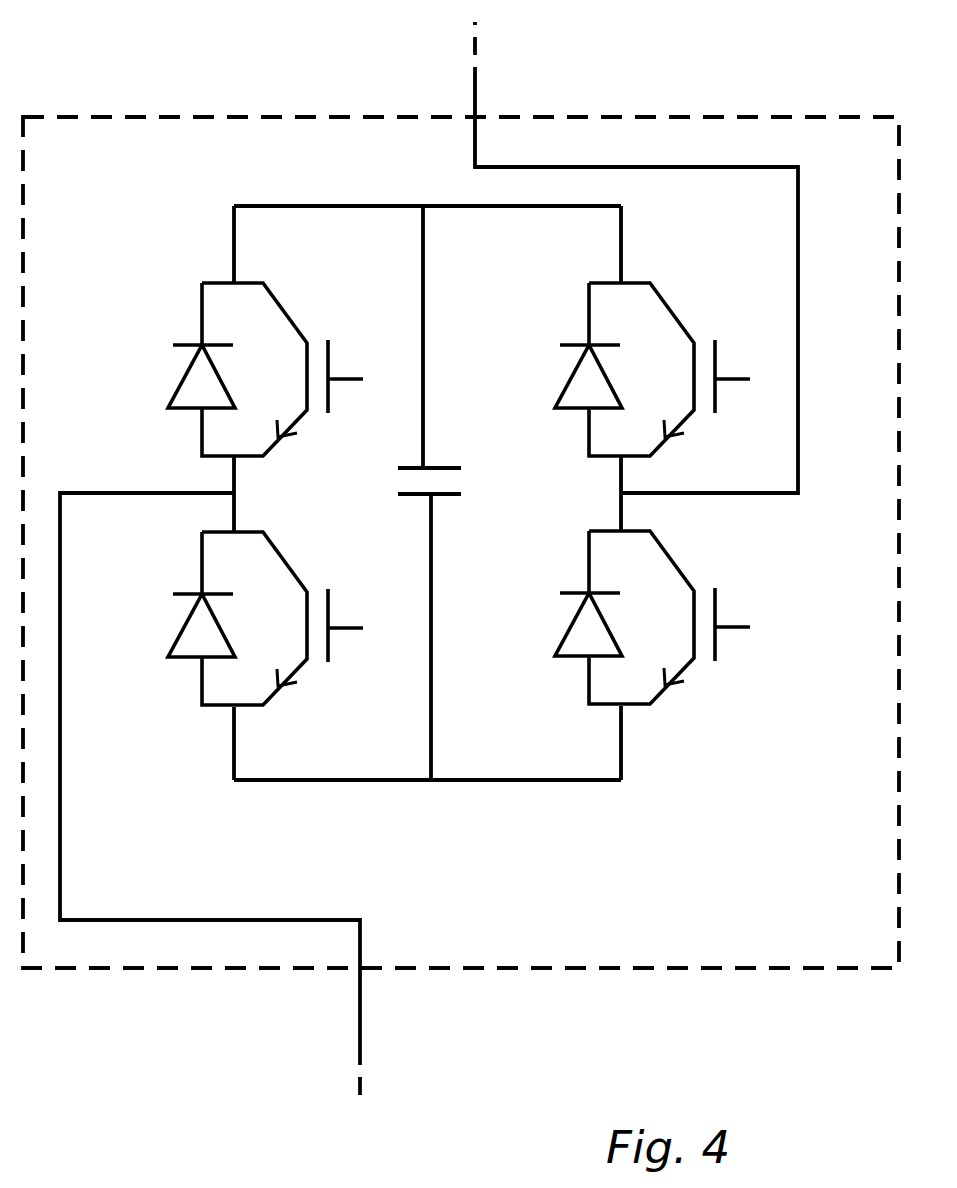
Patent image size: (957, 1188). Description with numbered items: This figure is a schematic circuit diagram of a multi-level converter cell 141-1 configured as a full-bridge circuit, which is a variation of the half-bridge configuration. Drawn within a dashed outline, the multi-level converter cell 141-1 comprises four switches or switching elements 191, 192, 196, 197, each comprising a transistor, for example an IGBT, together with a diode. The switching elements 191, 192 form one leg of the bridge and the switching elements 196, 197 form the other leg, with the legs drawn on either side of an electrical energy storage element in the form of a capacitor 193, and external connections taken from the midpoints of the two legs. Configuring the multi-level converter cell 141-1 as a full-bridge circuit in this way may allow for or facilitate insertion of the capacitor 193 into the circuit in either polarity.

The multi-level converter cell 141-1 is at (263, 117).
The switching element 191 is at (192, 262).
The switching element 192 is at (208, 733).
The capacitor 193 is at (449, 438).
The switching element 196 is at (685, 268).
The switching element 197 is at (688, 733).